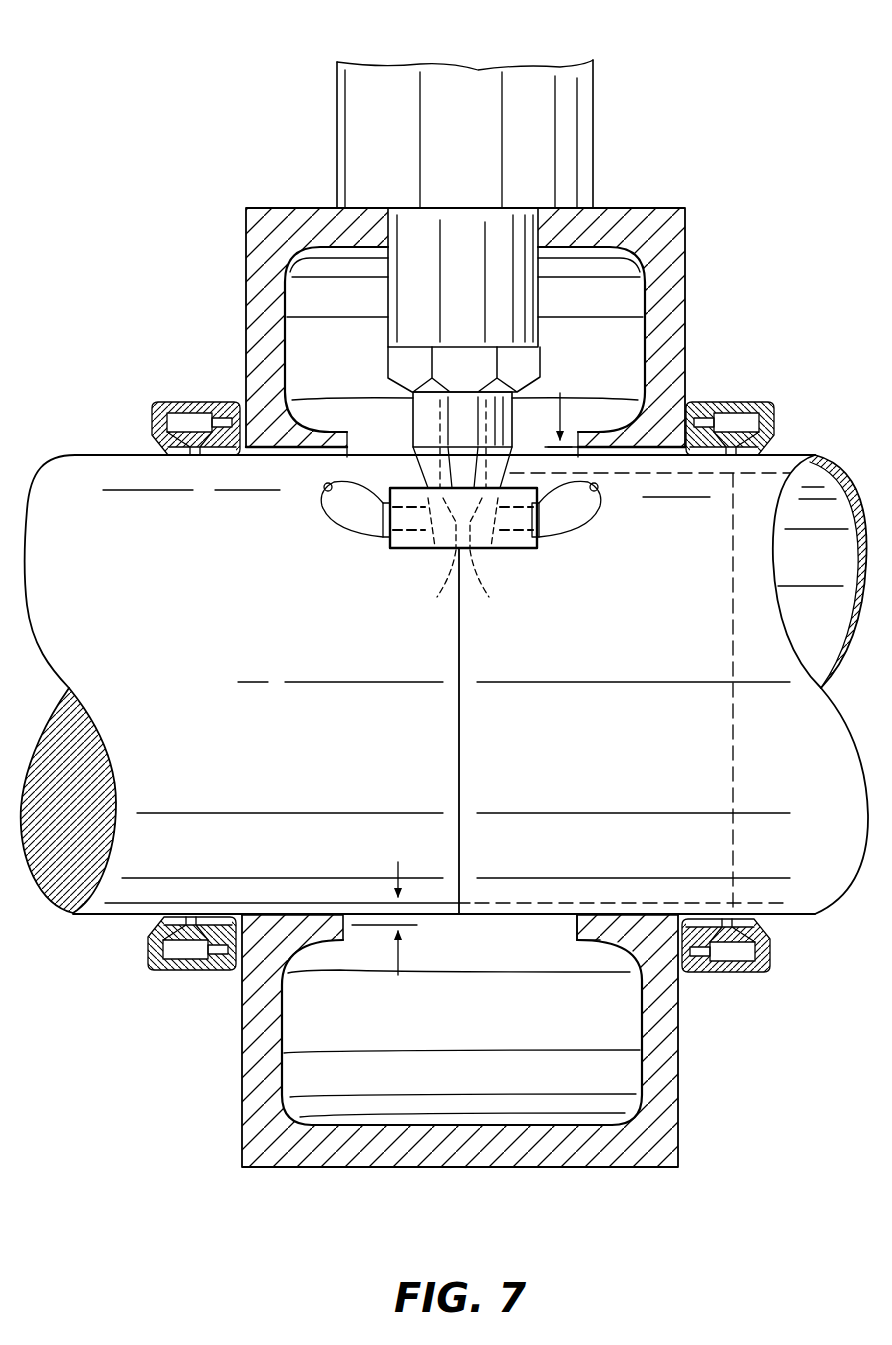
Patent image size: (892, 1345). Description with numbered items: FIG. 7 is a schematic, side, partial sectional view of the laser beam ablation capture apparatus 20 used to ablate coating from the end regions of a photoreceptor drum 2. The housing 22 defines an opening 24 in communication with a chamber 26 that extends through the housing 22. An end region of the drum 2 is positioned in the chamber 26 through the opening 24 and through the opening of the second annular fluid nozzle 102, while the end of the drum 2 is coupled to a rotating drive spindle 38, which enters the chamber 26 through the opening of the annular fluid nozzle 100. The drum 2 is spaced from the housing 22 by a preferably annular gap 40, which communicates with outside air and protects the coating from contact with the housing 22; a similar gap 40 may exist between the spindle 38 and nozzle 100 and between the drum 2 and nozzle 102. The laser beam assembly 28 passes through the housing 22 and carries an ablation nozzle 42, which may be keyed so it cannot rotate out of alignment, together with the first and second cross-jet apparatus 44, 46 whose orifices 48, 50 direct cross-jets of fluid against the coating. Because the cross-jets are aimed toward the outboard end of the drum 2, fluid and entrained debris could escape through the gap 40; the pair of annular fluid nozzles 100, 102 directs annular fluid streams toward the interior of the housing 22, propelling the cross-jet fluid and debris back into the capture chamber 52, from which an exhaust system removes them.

The photoreceptor drum 2 is at (815, 442).
The laser beam ablation capture apparatus 20 is at (668, 197).
The housing 22 is at (325, 207).
The opening 24 is at (235, 978).
The chamber 26 is at (577, 920).
The laser beam assembly 28 is at (565, 48).
The drive spindle 38 is at (120, 465).
The gap 40 is at (466, 690).
The ablation nozzle 42 is at (434, 433).
The first cross-jet apparatus 44 is at (554, 537).
The second cross-jet apparatus 46 is at (368, 537).
The orifice 48 is at (498, 587).
The orifice 50 is at (428, 587).
The capture chamber 52 is at (622, 1037).
The annular fluid nozzle 100 is at (200, 385).
The second annular fluid nozzle 102 is at (735, 392).